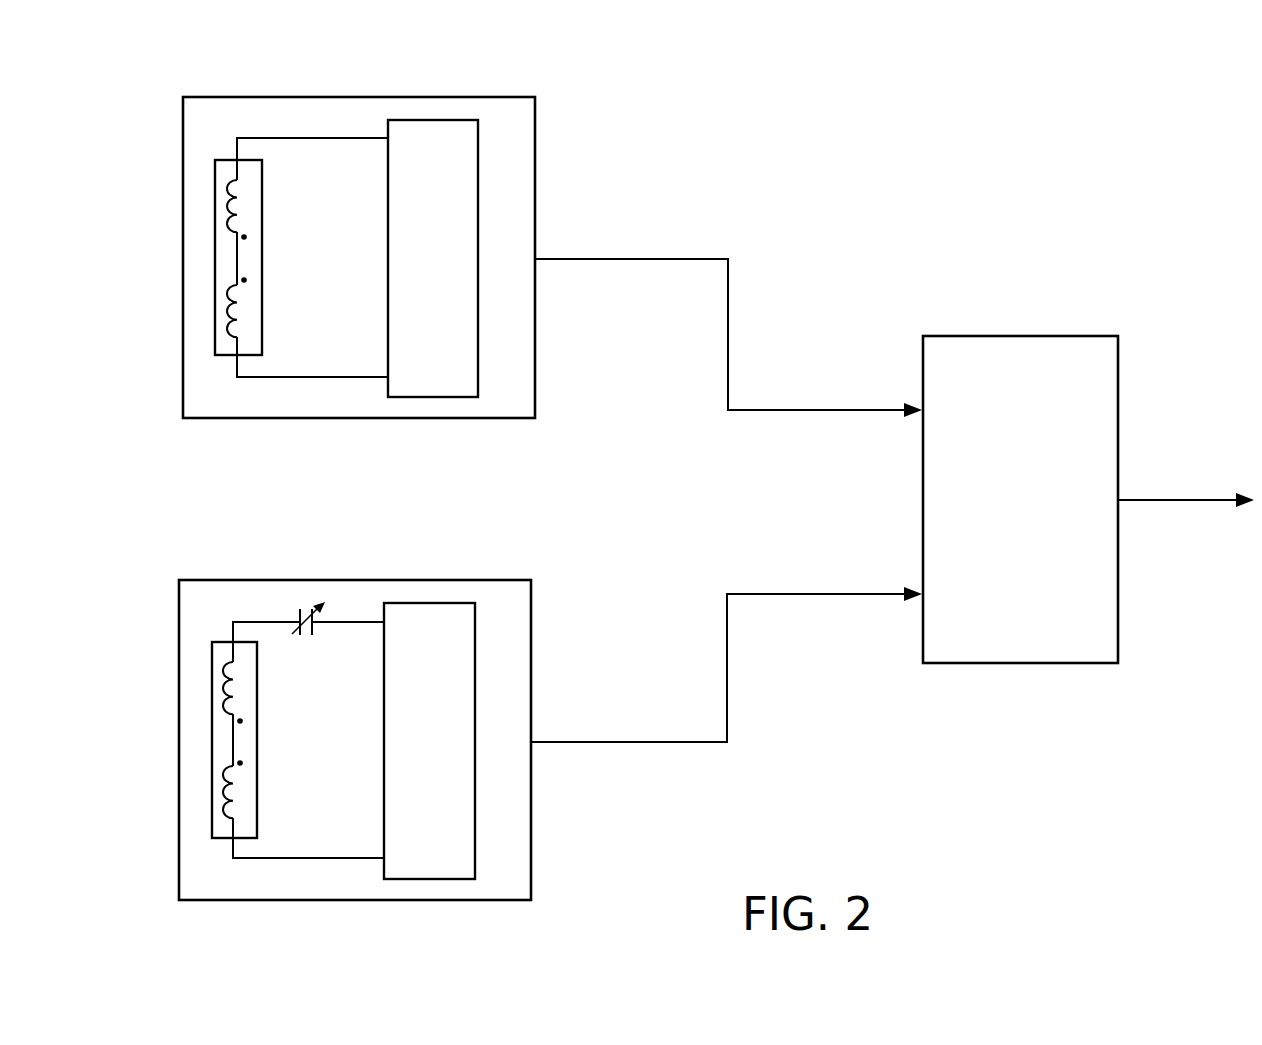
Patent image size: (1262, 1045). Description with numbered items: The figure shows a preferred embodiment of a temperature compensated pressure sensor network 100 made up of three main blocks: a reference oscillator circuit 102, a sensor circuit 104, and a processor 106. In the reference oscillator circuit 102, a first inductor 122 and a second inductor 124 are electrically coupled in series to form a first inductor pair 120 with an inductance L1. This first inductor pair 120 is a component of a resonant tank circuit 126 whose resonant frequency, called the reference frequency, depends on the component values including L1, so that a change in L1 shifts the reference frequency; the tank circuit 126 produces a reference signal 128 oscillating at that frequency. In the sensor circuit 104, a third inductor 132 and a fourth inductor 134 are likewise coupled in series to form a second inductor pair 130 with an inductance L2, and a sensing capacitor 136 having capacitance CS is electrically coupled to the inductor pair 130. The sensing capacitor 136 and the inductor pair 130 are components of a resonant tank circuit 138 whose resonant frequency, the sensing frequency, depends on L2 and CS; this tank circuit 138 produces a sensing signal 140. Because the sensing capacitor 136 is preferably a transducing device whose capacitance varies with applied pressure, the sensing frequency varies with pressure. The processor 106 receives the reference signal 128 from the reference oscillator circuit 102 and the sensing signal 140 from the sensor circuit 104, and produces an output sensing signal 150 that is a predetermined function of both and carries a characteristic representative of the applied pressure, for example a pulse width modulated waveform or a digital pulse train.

The temperature compensated pressure sensor network 100 is at (1202, 742).
The reference oscillator circuit 102 is at (518, 97).
The sensor circuit 104 is at (517, 580).
The processor 106 is at (1025, 336).
The first inductor pair 120 is at (197, 229).
The first inductor 122 is at (229, 198).
The second inductor 124 is at (229, 302).
The resonant tank circuit 126 is at (438, 120).
The reference signal 128 is at (638, 259).
The second inductor pair 130 is at (192, 712).
The third inductor 132 is at (225, 681).
The fourth inductor 134 is at (225, 785).
The sensing capacitor 136 is at (299, 612).
The resonant tank circuit 138 is at (433, 603).
The sensing signal 140 is at (635, 742).
The output sensing signal 150 is at (1155, 500).